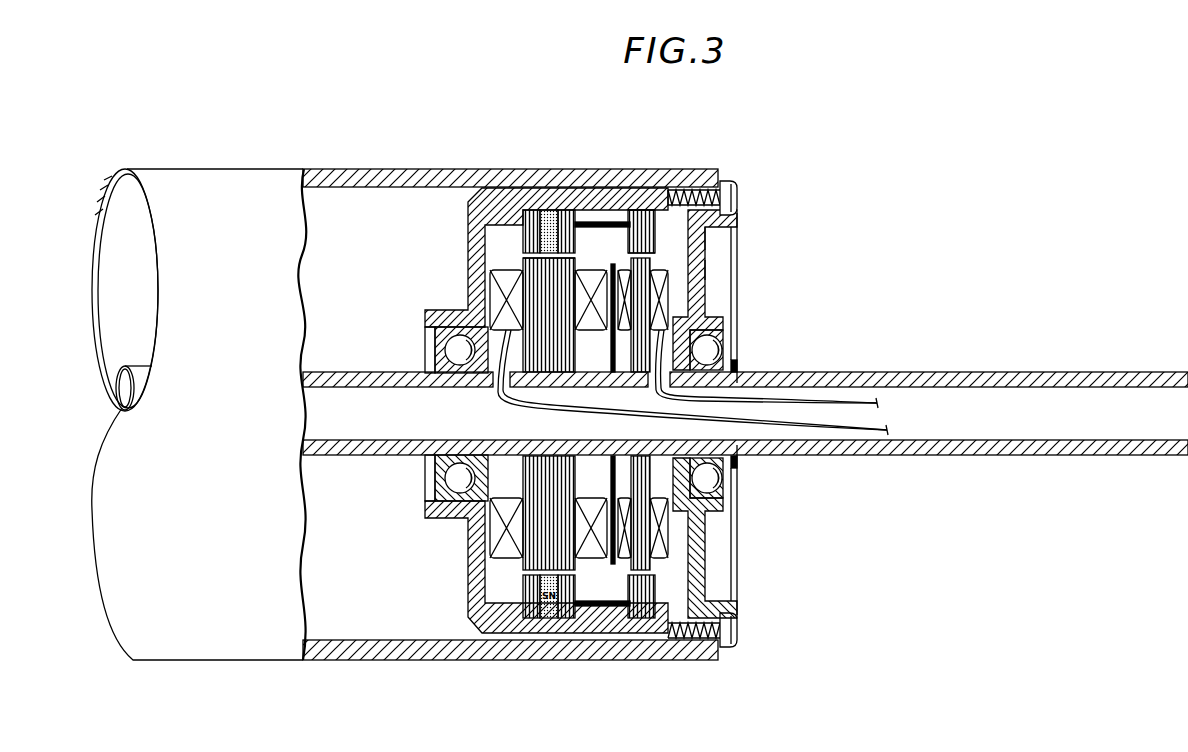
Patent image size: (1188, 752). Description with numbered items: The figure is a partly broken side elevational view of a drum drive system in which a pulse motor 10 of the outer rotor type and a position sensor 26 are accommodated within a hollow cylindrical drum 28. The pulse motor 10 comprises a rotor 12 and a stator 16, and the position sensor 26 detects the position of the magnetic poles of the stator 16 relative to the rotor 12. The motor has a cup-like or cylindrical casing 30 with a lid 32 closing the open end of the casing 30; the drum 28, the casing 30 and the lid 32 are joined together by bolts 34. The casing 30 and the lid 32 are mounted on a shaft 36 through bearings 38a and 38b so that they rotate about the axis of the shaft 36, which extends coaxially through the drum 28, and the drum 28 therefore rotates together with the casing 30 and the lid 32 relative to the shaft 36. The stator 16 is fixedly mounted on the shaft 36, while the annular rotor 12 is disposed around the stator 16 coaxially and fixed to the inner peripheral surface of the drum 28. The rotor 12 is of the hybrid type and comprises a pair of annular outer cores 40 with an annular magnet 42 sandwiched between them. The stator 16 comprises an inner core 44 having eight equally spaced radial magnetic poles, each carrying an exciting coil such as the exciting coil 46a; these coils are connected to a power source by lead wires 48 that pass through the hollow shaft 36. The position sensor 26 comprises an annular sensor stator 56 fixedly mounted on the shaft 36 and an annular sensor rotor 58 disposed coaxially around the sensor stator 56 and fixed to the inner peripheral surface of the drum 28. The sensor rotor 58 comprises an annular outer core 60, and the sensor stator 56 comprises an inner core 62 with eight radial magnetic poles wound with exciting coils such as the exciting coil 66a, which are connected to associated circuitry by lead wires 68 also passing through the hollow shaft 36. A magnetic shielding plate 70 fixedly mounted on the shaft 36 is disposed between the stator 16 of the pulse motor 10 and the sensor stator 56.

The pulse motor 10 is at (510, 252).
The rotor 12 is at (592, 228).
The stator 16 is at (642, 214).
The position sensor 26 is at (708, 246).
The drum 28 is at (343, 168).
The casing 30 is at (486, 196).
The lid 32 is at (700, 292).
The bolts 34 is at (738, 198).
The shaft 36 is at (904, 383).
The bearing 38a is at (735, 336).
The bearing 38b is at (428, 338).
The annular outer cores 40 is at (531, 212).
The annular magnet 42 is at (545, 212).
The inner core 44 is at (520, 268).
The exciting coil 46a is at (497, 292).
The lead wires 48 is at (888, 430).
The sensor stator 56 is at (657, 252).
The sensor rotor 58 is at (672, 208).
The annular outer core 60 is at (650, 212).
The inner core 62 is at (707, 268).
The exciting coil 66a is at (668, 300).
The lead wires 68 is at (878, 403).
The magnetic shielding plate 70 is at (613, 558).